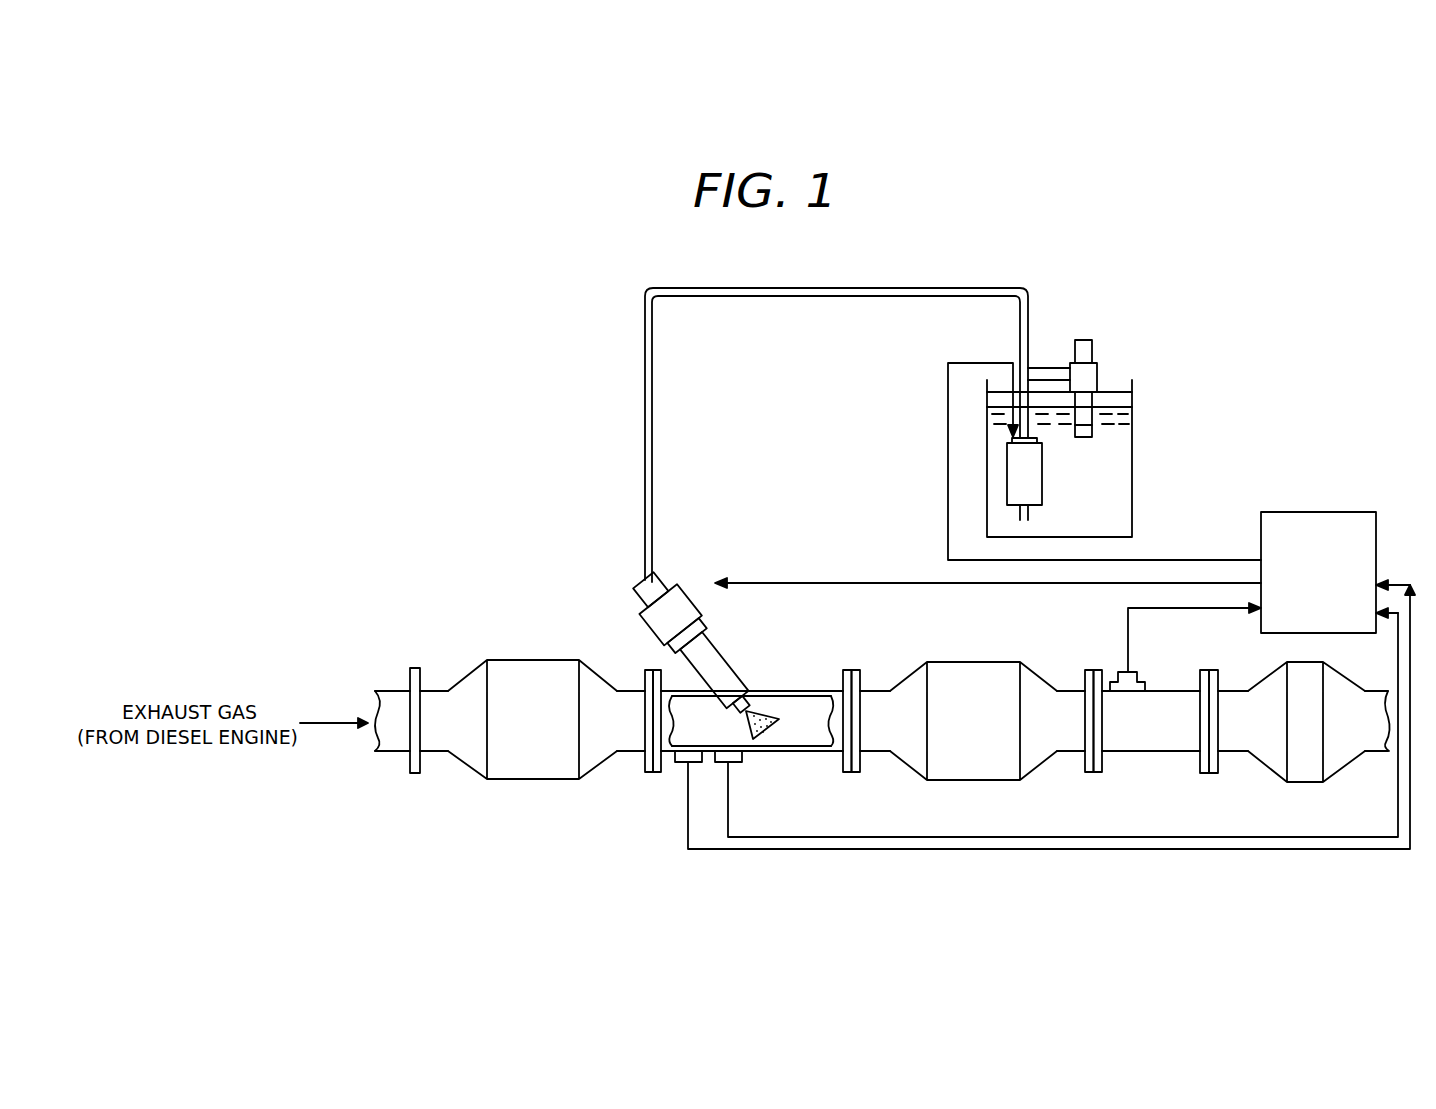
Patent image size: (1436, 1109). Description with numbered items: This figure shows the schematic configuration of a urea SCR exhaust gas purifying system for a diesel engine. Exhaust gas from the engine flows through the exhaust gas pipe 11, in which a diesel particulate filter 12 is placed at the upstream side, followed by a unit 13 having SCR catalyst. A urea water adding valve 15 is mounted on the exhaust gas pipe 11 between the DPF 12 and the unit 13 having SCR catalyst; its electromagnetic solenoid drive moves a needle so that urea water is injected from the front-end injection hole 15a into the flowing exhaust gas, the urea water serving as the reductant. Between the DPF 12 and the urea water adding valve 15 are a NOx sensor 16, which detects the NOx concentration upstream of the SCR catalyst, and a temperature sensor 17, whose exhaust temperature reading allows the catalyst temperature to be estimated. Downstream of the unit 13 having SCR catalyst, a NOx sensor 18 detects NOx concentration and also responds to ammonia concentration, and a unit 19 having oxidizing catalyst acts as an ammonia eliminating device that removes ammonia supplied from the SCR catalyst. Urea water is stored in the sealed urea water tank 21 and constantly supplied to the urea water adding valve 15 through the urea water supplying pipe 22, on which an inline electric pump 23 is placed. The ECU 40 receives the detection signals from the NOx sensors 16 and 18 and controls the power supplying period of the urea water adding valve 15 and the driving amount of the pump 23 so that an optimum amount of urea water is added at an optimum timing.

The exhaust gas pipe 11 is at (805, 755).
The diesel particulate filter 12 is at (534, 660).
The unit having SCR catalyst 13 is at (975, 662).
The urea water adding valve 15 is at (661, 584).
The front-end injection hole 15a is at (752, 700).
The NOx sensor 16 is at (676, 776).
The temperature sensor 17 is at (716, 776).
The NOx sensor 18 is at (1140, 672).
The unit having oxidizing catalyst 19 is at (1304, 782).
The urea water tank 21 is at (1133, 516).
The urea water supplying pipe 22 is at (702, 286).
The pump 23 is at (1010, 477).
The ECU 40 is at (1319, 512).